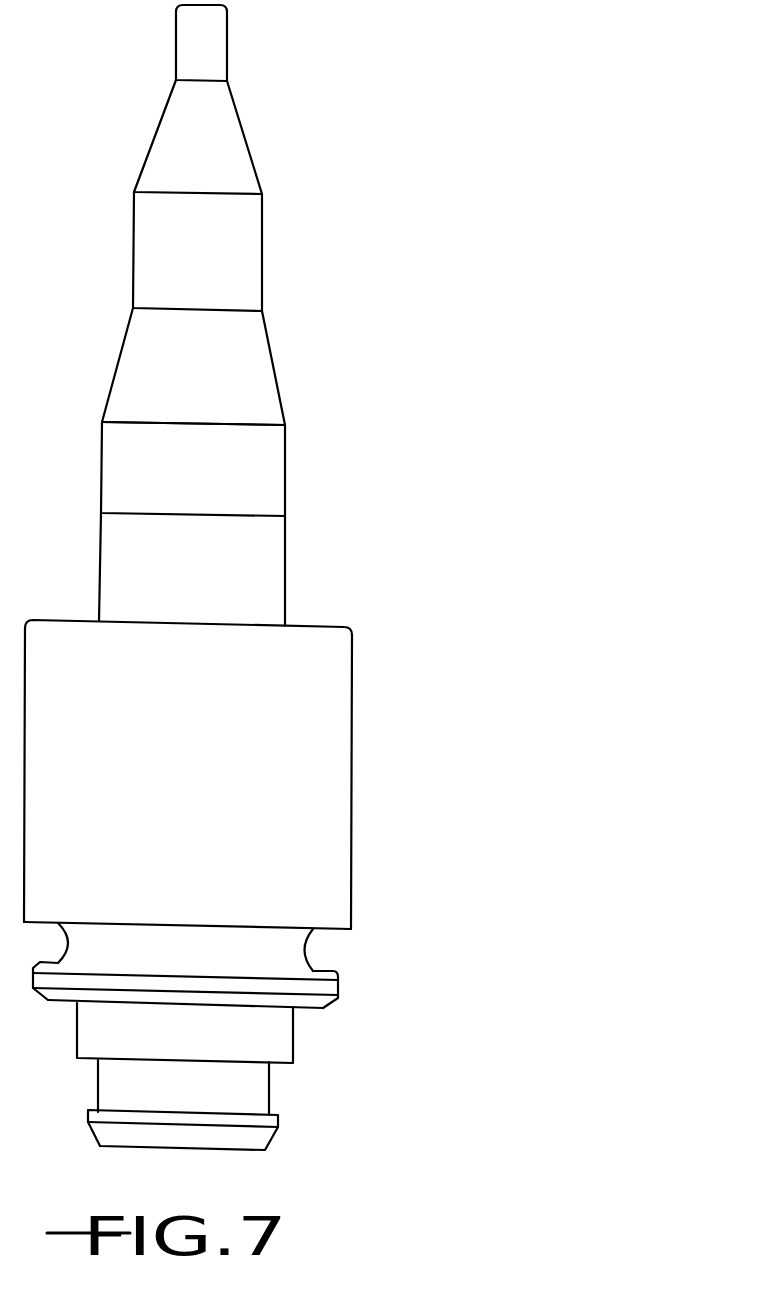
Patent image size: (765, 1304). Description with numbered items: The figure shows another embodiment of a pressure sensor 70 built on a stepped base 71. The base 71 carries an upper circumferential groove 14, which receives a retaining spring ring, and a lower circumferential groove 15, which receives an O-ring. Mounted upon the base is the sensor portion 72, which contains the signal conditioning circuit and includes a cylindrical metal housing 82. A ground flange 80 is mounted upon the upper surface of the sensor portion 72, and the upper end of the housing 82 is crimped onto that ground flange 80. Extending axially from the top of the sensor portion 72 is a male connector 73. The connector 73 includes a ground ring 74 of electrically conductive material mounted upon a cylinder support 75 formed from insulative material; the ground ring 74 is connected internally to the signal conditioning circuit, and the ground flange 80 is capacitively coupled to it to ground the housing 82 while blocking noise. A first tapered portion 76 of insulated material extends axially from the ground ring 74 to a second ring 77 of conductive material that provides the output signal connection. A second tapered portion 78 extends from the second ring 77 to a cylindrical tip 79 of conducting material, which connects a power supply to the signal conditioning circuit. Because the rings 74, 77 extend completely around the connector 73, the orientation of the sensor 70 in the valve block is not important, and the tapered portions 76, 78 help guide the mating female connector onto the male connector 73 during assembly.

The pressure sensor 70 is at (405, 143).
The cylindrical tip 79 is at (207, 40).
The second tapered portion 78 is at (220, 144).
The second ring 77 is at (232, 262).
The first tapered portion 76 is at (248, 358).
The male connector 73 is at (328, 415).
The ground ring 74 is at (270, 482).
The cylinder support 75 is at (272, 569).
The sensor portion 72 is at (328, 748).
The ground flange 80 is at (312, 627).
The cylindrical metal housing 82 is at (354, 700).
The upper circumferential groove 14 is at (354, 953).
The stepped base 71 is at (293, 1036).
The lower circumferential groove 15 is at (282, 1093).